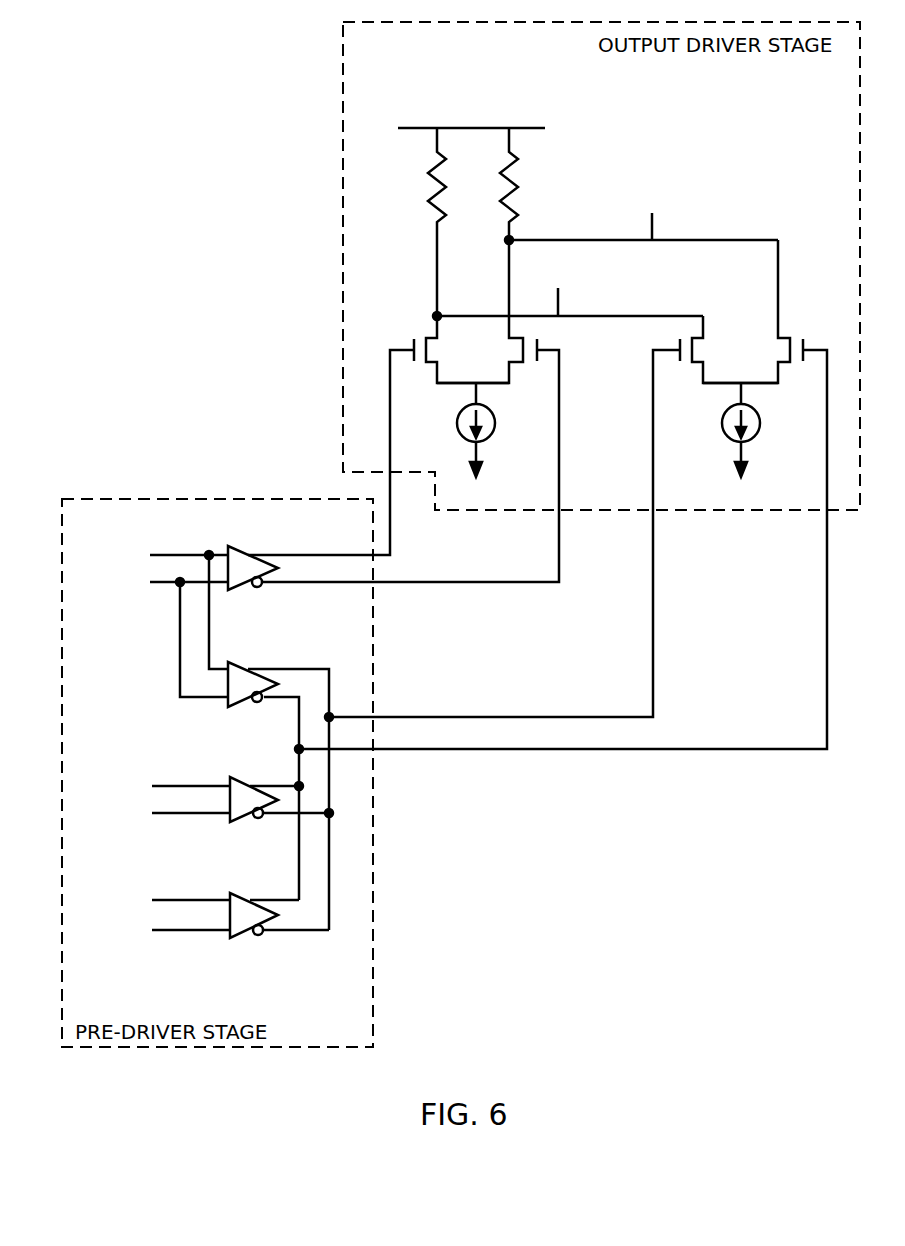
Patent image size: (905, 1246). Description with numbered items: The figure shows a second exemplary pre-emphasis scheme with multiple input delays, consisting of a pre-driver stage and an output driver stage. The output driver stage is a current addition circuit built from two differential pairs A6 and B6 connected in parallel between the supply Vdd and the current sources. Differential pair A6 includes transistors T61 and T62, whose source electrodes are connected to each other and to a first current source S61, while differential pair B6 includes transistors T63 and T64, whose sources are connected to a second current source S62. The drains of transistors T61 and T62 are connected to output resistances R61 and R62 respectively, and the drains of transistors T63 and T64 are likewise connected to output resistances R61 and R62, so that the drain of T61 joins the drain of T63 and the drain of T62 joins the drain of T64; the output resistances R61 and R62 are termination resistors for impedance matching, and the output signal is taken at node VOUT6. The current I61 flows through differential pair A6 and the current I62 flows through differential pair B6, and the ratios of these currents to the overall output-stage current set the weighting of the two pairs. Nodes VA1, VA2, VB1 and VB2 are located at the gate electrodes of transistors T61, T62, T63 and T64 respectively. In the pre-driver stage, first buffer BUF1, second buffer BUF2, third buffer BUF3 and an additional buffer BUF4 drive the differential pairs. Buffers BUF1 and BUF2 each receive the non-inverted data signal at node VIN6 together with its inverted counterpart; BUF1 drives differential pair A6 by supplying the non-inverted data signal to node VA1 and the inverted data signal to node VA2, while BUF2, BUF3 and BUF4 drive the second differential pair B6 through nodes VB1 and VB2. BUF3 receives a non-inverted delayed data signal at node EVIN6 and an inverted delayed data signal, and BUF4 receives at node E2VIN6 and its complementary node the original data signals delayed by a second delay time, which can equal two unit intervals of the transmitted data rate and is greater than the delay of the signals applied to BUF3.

The supply voltage Vdd is at (481, 114).
The output resistance R61 is at (417, 222).
The output resistance R62 is at (529, 184).
The output voltage node VOUT6 is at (641, 215).
The transistor T61 is at (443, 349).
The transistor T62 is at (505, 311).
The transistor T63 is at (710, 349).
The transistor T64 is at (772, 311).
The first current source S61 is at (493, 412).
The second current source S62 is at (758, 412).
The current I61 is at (481, 475).
The current I62 is at (746, 475).
The differential pair A6 is at (408, 315).
The differential pair B6 is at (801, 315).
The node VA1 is at (331, 438).
The node VA2 is at (428, 457).
The node VB1 is at (464, 631).
The node VB2 is at (554, 615).
The first buffer BUF1 is at (237, 546).
The second buffer BUF2 is at (237, 662).
The third buffer BUF3 is at (240, 777).
The additional buffer BUF4 is at (240, 938).
The node VIN6 is at (166, 606).
The node EVIN6 is at (196, 786).
The node E2VIN6 is at (190, 900).